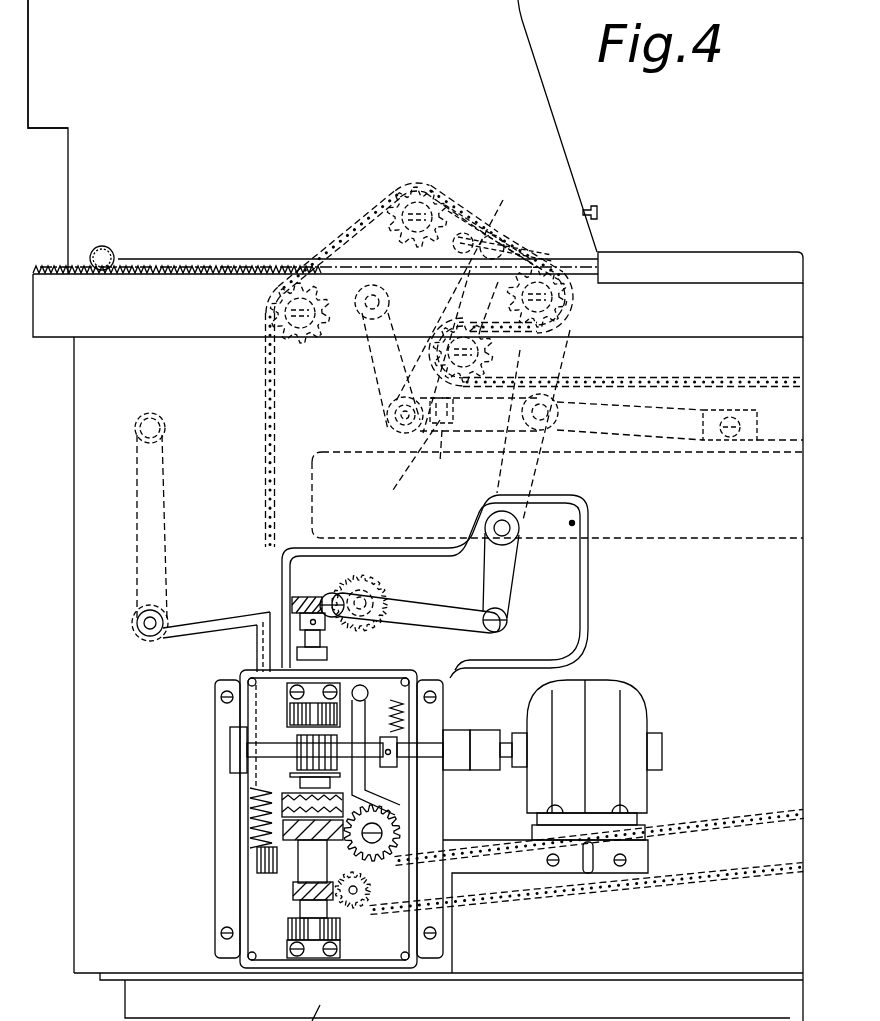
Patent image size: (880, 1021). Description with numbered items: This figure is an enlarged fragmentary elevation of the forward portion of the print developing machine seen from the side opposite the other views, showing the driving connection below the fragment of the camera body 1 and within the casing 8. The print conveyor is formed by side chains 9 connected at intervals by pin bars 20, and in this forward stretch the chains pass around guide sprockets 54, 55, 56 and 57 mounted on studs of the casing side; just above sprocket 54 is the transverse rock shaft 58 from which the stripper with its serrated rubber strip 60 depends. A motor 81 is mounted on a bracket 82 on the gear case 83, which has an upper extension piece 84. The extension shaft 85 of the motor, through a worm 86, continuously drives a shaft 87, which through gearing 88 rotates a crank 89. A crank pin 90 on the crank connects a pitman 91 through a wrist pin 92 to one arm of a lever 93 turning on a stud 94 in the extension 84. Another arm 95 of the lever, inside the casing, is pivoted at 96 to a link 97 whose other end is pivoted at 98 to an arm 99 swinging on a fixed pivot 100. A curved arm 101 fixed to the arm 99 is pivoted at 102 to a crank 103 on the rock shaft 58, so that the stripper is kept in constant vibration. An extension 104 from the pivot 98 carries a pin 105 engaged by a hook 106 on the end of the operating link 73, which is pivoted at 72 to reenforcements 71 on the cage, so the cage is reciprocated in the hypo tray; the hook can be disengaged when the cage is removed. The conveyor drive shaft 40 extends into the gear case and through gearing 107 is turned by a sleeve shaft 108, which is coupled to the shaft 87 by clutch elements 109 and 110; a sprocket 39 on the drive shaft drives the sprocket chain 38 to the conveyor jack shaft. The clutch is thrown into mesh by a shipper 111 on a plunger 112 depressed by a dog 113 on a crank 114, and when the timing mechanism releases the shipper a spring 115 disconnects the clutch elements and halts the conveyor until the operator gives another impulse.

The camera body 1 is at (85, 160).
The casing 8 is at (747, 739).
The side chains 9 is at (667, 377).
The pin bars 20 is at (452, 308).
The sprocket chain 38 is at (560, 898).
The sprocket 39 is at (376, 915).
The main driving shaft 40 is at (370, 890).
The guide sprocket 54 is at (500, 352).
The guide sprocket 55 is at (573, 300).
The guide sprocket 56 is at (453, 197).
The guide sprocket 57 is at (315, 335).
The rock shaft 58 is at (487, 233).
The serrated rubber strip 60 is at (479, 306).
The reenforcements 71 is at (744, 423).
The pivot 72 is at (762, 395).
The operating links 73 is at (651, 437).
The motor 81 is at (640, 708).
The bracket 82 is at (648, 853).
The gear case 83 is at (240, 803).
The upper extension piece 84 is at (388, 548).
The extension shaft 85 is at (400, 713).
The worm 86 is at (287, 732).
The shaft 87 is at (320, 635).
The gearing 88 is at (350, 583).
The crank 89 is at (350, 583).
The crank pin 90 is at (323, 628).
The pitman 91 is at (443, 620).
The wrist pin 92 is at (507, 615).
The lever 93 is at (507, 573).
The stud 94 is at (519, 525).
The lever arm 95 is at (543, 477).
The pivot 96 is at (560, 410).
The link 97 is at (415, 460).
The pivot 98 is at (383, 412).
The arm 99 is at (380, 371).
The fixed pivot 100 is at (388, 292).
The curved arm 101 is at (398, 254).
The pivot 102 is at (520, 252).
The crank 103 is at (500, 238).
The extension 104 is at (277, 385).
The pin 105 is at (456, 457).
The hook 106 is at (463, 410).
The gearing 107 is at (330, 902).
The sleeve shaft 108 is at (313, 853).
The clutch element 109 is at (253, 823).
The clutch element 110 is at (258, 849).
The shipper 111 is at (287, 787).
The plunger 112 is at (235, 642).
The dog 113 is at (197, 627).
The crank 114 is at (160, 497).
The spring 115 is at (260, 848).